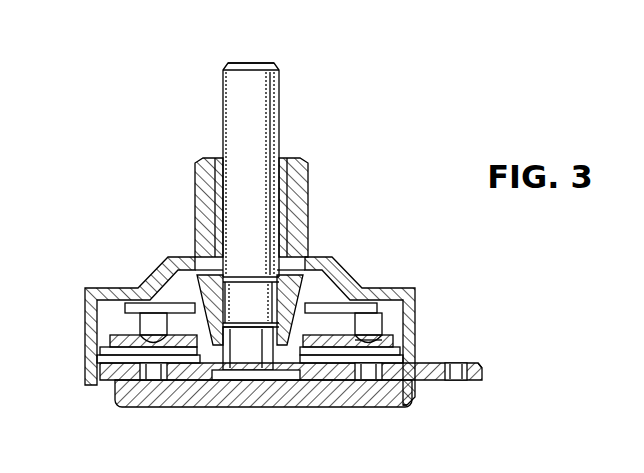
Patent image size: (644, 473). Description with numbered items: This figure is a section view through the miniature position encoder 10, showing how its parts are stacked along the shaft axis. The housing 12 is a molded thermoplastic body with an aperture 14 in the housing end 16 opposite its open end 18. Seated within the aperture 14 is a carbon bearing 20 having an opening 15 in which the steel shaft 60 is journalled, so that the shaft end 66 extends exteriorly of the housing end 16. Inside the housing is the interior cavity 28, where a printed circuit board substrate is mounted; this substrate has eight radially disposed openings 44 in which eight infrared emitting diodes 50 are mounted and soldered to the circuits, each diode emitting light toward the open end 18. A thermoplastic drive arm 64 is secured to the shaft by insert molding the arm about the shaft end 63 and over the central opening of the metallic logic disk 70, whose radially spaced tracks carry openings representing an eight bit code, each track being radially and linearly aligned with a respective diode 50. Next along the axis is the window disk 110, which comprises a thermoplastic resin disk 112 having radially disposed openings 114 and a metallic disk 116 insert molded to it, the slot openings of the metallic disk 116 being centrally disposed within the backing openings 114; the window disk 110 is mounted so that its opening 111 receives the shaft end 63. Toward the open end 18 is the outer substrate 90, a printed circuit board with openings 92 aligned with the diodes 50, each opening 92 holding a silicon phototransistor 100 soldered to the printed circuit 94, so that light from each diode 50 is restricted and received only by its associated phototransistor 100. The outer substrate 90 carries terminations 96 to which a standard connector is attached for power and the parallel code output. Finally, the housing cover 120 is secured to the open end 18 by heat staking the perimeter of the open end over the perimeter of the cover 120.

The miniature position encoder 10 is at (100, 165).
The housing 12 is at (98, 287).
The aperture 14 is at (306, 188).
The opening 15 is at (222, 148).
The housing end 16 is at (195, 185).
The open end 18 is at (410, 356).
The carbon bearing 20 is at (283, 150).
The interior cavity 28 is at (405, 293).
The radially disposed openings 44 is at (353, 315).
The infrared emitting diodes 50 is at (138, 318).
The steel shaft 60 is at (280, 95).
The shaft end 63 is at (262, 385).
The drive arm 64 is at (297, 268).
The shaft end 66 is at (251, 63).
The logic disk 70 is at (400, 345).
The outer substrate 90 is at (483, 372).
The substrate openings 92 is at (150, 395).
The printed circuit 94 is at (205, 395).
The terminations 96 is at (462, 381).
The silicon phototransistor 100 is at (368, 388).
The window disk 110 is at (125, 340).
The opening 111 is at (212, 385).
The thermoplastic resin disk 112 is at (395, 388).
The radially disposed openings 114 is at (95, 385).
The metallic disk 116 is at (125, 347).
The housing cover 120 is at (333, 408).